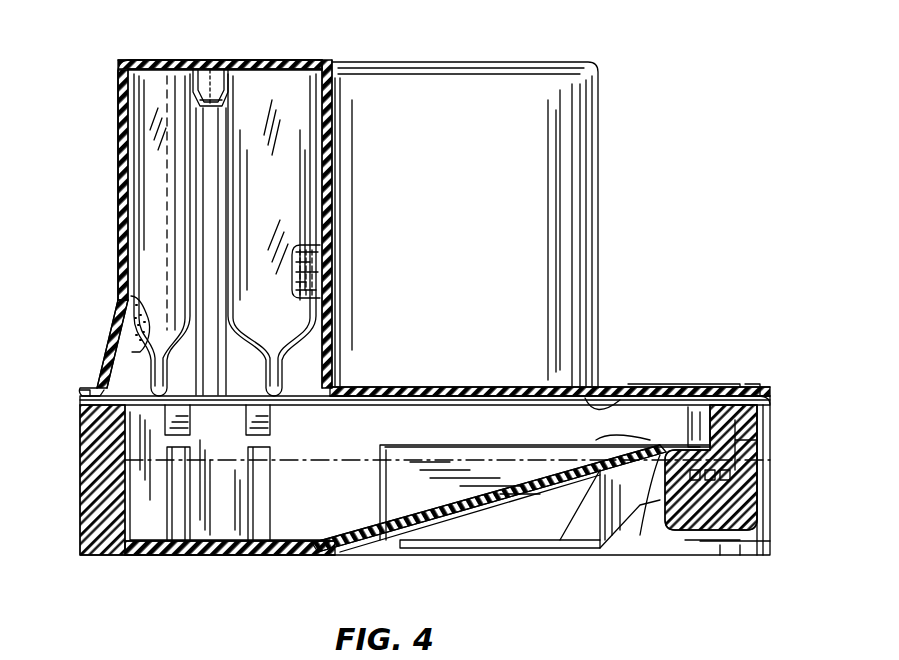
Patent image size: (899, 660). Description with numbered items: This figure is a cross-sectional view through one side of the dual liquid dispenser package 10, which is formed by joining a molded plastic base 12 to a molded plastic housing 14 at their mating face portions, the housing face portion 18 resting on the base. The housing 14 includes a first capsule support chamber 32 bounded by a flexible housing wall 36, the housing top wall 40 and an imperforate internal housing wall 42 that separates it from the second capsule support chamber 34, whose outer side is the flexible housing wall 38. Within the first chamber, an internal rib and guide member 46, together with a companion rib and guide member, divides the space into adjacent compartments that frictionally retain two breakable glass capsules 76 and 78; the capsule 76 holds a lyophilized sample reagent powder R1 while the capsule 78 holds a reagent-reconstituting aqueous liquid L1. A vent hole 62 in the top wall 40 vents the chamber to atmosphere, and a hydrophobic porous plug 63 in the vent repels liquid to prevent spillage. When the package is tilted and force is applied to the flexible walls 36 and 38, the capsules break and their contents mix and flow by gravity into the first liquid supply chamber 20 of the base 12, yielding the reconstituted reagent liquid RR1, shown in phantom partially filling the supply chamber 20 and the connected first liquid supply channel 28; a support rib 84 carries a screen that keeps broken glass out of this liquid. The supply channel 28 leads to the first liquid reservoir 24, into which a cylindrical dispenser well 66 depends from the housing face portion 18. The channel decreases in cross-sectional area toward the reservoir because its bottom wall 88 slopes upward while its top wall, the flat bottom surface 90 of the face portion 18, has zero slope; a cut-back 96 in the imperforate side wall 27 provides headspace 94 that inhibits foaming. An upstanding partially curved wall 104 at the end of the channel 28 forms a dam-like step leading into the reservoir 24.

The dual liquid dispenser package 10 is at (108, 238).
The base 12 is at (78, 490).
The housing 14 is at (603, 220).
The face portion of housing 18 is at (760, 392).
The first liquid supply chamber 20 is at (236, 522).
The first liquid reservoir 24 is at (740, 498).
The imperforate wall 27 is at (562, 510).
The first liquid supply channel 28 is at (458, 494).
The first capsule support chamber 32 is at (116, 178).
The second capsule support chamber 34 is at (552, 145).
The flexible housing wall 36 is at (116, 272).
The flexible housing wall 38 is at (580, 290).
The housing top wall 40 is at (306, 64).
The internal housing wall 42 is at (335, 146).
The internal rib and guide member 46 is at (222, 70).
The vent hole 62 is at (210, 80).
The porous plug 63 is at (206, 72).
The dispenser well 66 is at (755, 440).
The capsule 76 is at (150, 92).
The capsule 78 is at (274, 78).
The support rib 84 is at (232, 430).
The wall 88 is at (500, 500).
The bottom surface 90 is at (598, 412).
The headspace 94 is at (596, 430).
The cut-back 96 is at (608, 480).
The upstanding partially curved wall 104 is at (700, 425).
The reagent powder-reconstituting aqueous liquid L1 is at (308, 276).
The lyophilized sample reagent powder R1 is at (140, 330).
The reconstituted reagent liquid RR1 is at (372, 455).